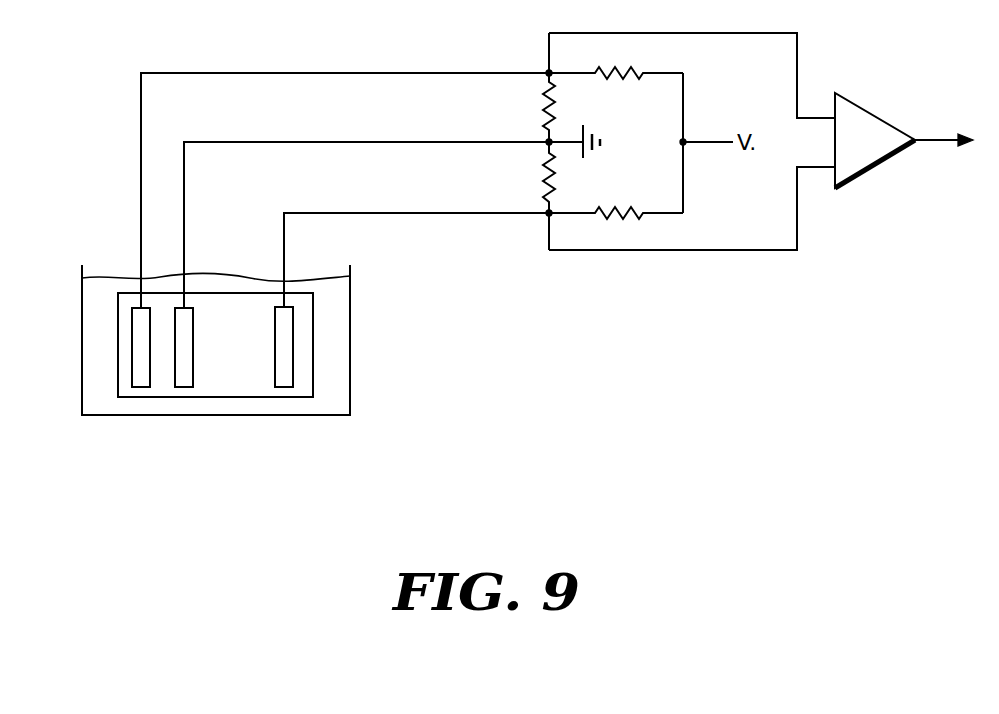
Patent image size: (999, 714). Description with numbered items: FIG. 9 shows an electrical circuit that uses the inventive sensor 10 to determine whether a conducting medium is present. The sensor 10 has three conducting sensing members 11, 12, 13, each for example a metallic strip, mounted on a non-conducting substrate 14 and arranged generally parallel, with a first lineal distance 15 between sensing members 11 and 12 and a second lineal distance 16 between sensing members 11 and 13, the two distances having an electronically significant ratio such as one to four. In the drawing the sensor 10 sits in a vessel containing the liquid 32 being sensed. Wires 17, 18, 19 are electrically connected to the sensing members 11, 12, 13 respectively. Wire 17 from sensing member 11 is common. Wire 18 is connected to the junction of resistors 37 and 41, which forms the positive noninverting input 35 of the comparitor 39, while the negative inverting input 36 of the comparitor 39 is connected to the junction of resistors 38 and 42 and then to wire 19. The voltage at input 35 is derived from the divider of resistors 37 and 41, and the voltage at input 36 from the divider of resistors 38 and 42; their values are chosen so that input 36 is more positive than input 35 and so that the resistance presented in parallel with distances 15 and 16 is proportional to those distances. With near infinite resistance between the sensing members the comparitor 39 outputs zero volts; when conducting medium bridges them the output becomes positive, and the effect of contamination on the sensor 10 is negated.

The sensor 10 is at (167, 377).
The sensing member 11 is at (185, 377).
The sensing member 12 is at (140, 377).
The sensing member 13 is at (283, 377).
The non-conducting substrate 14 is at (238, 398).
The first lineal distance 15 is at (163, 347).
The second lineal distance 16 is at (230, 347).
The wire 17 is at (345, 142).
The wire 18 is at (345, 73).
The wire 19 is at (347, 213).
The electrolyte solution 32 is at (93, 295).
The positive input 35 is at (827, 112).
The negative input 36 is at (827, 172).
The resistor 37 is at (538, 100).
The resistor 38 is at (538, 173).
The comparitor 39 is at (887, 117).
The resistor 41 is at (621, 63).
The resistor 42 is at (626, 221).